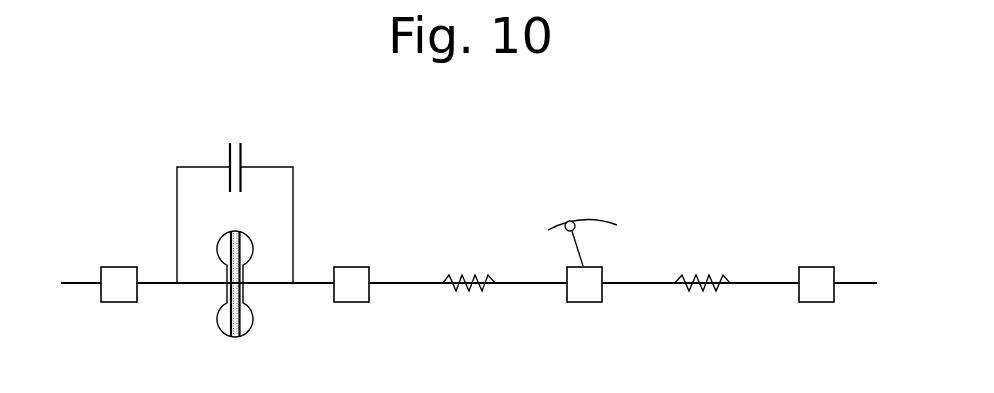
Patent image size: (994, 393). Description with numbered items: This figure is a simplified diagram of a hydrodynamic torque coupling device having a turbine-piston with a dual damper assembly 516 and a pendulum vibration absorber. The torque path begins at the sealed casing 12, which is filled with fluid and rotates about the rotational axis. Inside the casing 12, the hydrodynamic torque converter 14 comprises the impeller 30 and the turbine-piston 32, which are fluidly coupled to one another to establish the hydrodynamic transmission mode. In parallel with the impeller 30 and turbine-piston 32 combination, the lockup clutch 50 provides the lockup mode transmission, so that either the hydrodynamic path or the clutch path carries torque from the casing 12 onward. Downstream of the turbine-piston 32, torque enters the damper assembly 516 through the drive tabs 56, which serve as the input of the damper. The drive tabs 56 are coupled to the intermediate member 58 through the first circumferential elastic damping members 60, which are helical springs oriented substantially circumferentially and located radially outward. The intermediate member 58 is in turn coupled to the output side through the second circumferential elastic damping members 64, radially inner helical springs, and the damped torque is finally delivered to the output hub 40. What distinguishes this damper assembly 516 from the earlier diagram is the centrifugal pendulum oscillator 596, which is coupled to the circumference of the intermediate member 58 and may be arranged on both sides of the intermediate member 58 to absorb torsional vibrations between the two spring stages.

The sealed casing 12 is at (118, 272).
The hydrodynamic torque converter 14 is at (209, 264).
The impeller 30 is at (218, 321).
The turbine-piston 32 is at (252, 321).
The output hub 40 is at (818, 272).
The lockup clutch 50 is at (262, 148).
The drive tabs 56 is at (356, 272).
The intermediate member 58 is at (585, 293).
The first circumferential elastic damping members 60 is at (465, 293).
The second circumferential elastic damping members 64 is at (697, 293).
The damper assembly 516 is at (654, 250).
The centrifugal pendulum oscillator 596 is at (605, 206).